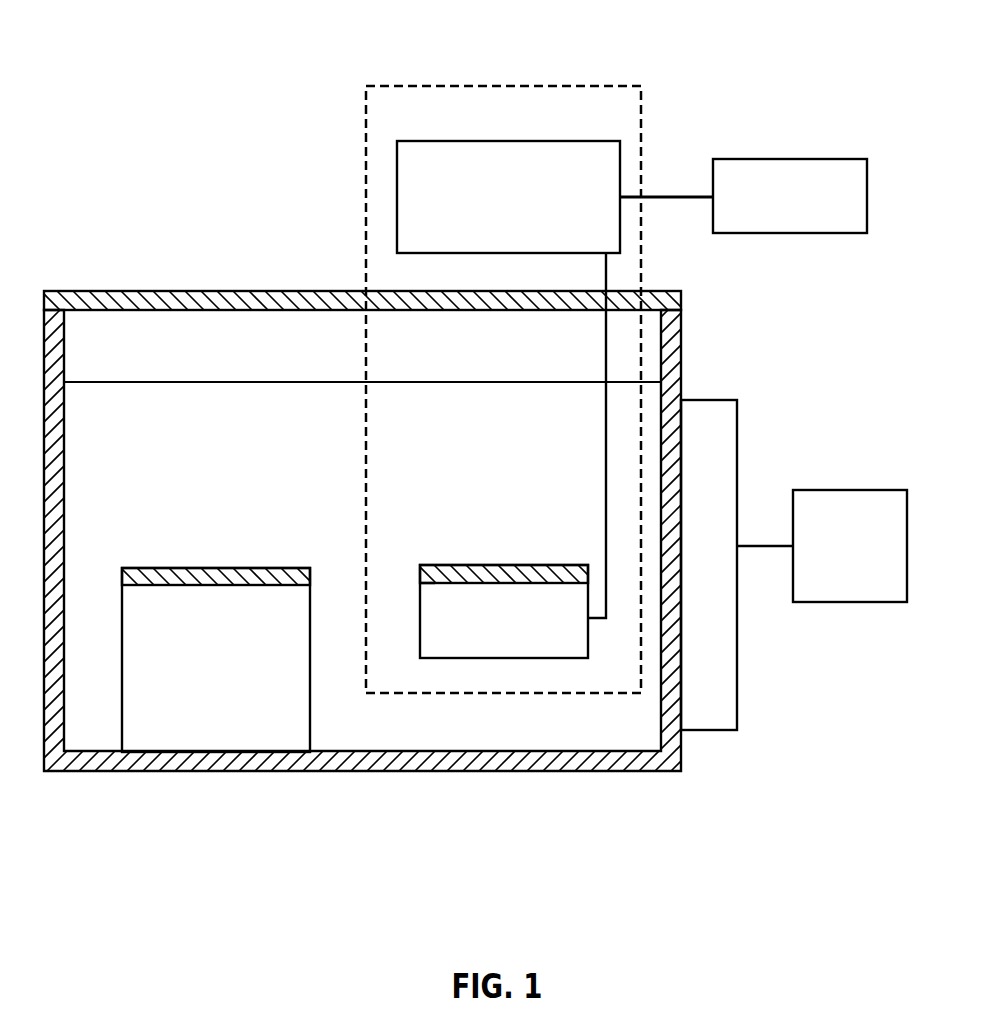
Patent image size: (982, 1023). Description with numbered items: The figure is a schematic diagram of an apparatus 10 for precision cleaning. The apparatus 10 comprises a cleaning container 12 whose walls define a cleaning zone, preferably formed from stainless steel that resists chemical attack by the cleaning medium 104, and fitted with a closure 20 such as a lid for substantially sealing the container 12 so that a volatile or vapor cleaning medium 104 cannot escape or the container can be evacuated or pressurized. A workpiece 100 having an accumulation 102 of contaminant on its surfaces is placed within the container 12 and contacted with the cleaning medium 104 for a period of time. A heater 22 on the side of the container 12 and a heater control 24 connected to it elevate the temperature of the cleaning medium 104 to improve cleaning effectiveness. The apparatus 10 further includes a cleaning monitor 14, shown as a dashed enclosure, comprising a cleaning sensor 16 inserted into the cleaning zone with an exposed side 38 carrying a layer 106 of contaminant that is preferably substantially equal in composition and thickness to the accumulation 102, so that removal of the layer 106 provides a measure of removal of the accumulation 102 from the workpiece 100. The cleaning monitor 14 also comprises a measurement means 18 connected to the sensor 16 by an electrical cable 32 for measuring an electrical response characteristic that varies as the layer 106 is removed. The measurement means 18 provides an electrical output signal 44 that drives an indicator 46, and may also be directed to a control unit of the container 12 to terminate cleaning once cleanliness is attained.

The apparatus 10 is at (689, 810).
The cleaning container 12 is at (680, 350).
The cleaning monitor 14 is at (363, 110).
The cleaning sensor 16 is at (489, 641).
The measurement means 18 is at (493, 232).
The closure 20 is at (252, 292).
The heater 22 is at (737, 463).
The heater control 24 is at (834, 582).
The electrical cable 32 is at (605, 355).
The exposed side 38 is at (435, 587).
The electrical output signal 44 is at (657, 197).
The indicator 46 is at (774, 221).
The workpiece 100 is at (194, 687).
The accumulation of contaminant 102 is at (308, 575).
The cleaning medium 104 is at (173, 497).
The layer of contaminant 106 is at (512, 575).